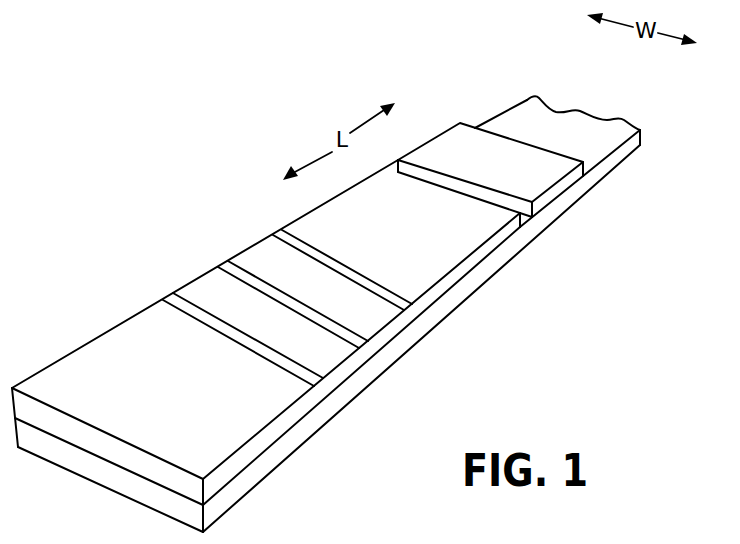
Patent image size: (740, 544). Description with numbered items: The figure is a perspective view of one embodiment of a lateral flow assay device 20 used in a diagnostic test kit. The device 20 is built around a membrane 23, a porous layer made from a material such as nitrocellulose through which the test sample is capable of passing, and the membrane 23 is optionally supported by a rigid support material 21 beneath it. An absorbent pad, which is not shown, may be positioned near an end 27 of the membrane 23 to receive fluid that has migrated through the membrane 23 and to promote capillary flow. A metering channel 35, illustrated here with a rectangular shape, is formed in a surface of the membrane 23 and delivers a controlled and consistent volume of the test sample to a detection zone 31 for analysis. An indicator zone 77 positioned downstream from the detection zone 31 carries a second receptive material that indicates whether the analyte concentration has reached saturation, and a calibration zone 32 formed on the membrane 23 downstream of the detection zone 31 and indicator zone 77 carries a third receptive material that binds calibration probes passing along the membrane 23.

The lateral flow assay device 20 is at (357, 437).
The rigid support material 21 is at (598, 146).
The membrane 23 is at (431, 265).
The end of the membrane 27 is at (47, 402).
The detection zone 31 is at (333, 253).
The calibration zone 32 is at (200, 307).
The metering channel 35 is at (417, 168).
The indicator zone 77 is at (251, 287).